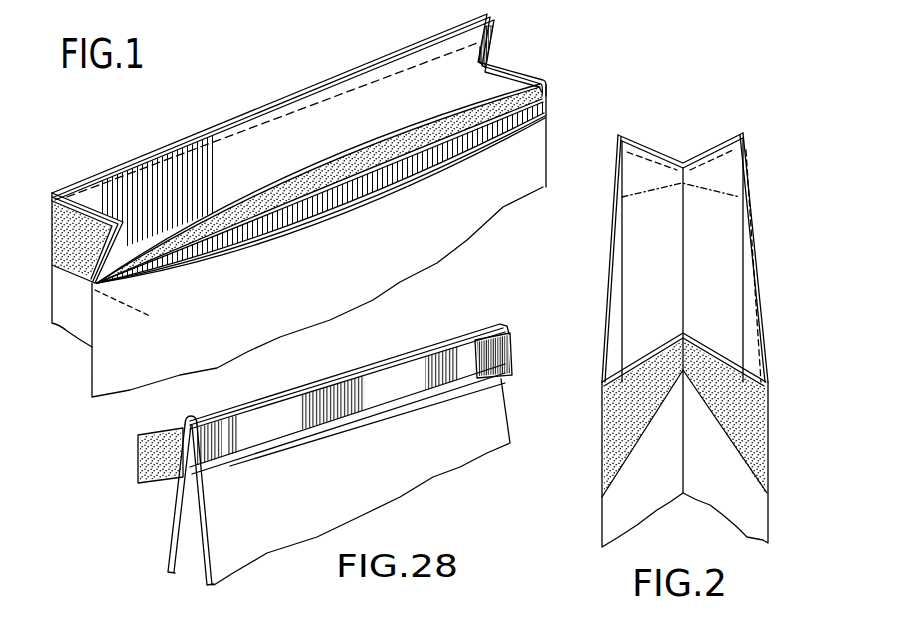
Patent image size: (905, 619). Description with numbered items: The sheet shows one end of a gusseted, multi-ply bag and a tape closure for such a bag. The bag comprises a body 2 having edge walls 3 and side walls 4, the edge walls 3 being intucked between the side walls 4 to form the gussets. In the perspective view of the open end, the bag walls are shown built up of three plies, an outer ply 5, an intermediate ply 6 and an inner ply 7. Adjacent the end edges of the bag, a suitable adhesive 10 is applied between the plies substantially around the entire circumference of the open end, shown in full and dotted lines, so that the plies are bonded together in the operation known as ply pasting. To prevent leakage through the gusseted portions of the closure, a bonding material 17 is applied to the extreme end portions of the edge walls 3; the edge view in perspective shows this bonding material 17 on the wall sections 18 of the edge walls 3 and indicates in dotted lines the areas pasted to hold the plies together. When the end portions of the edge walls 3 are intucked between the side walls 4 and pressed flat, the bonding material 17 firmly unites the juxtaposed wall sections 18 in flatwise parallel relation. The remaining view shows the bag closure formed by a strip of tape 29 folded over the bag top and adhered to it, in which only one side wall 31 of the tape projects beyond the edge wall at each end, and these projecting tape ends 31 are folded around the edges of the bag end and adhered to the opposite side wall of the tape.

In FIG. 28, the body 2 is at (395, 486).
In FIG. 2, the body 2 is at (768, 531).
In FIG. 1, the edge walls 3 is at (93, 262).
In FIG. 2, the edge walls 3 is at (640, 484).
In FIG. 1, the side walls 4 is at (248, 112).
In FIG. 2, the side walls 4 is at (610, 241).
In FIG. 1, the outer ply 5 is at (240, 255).
In FIG. 1, the intermediate ply 6 is at (318, 182).
In FIG. 1, the inner ply 7 is at (268, 182).
In FIG. 1, the adhesive 10 is at (228, 148).
In FIG. 2, the adhesive 10 is at (645, 159).
In FIG. 1, the bonding material 17 is at (67, 238).
In FIG. 2, the bonding material 17 is at (651, 190).
In FIG. 1, the wall sections 18 is at (117, 250).
In FIG. 2, the wall sections 18 is at (704, 152).
In FIG. 28, the strip of tape 29 is at (306, 376).
In FIG. 28, the side wall of tape 31 is at (168, 452).